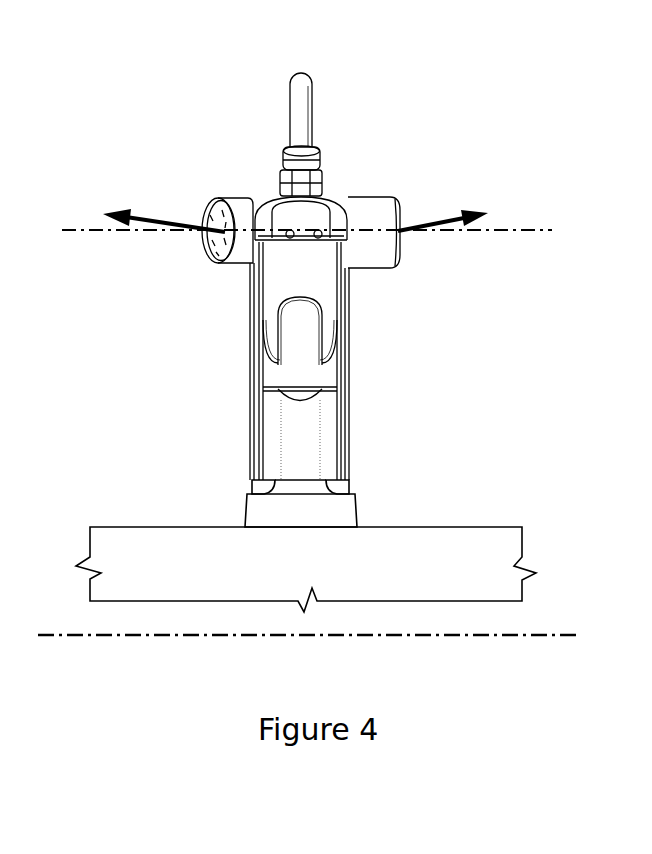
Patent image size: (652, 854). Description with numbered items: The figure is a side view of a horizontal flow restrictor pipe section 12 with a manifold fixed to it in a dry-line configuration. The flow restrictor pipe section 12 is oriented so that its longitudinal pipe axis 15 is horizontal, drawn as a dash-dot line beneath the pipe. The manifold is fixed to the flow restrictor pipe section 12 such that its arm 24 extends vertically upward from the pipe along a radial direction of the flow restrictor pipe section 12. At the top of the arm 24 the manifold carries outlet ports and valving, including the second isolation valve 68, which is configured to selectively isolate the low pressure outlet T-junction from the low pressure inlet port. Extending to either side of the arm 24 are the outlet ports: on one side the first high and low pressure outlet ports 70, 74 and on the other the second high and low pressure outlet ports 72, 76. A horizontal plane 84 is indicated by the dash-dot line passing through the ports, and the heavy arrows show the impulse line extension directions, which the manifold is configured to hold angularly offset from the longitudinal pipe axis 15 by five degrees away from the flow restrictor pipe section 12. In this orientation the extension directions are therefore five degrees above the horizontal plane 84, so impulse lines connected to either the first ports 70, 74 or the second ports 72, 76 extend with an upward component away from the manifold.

The flow restrictor pipe section 12 is at (142, 558).
The longitudinal pipe axis 15 is at (577, 628).
The arm 24 is at (332, 400).
The second isolation valve 68 is at (293, 108).
The first high pressure outlet port 70 is at (400, 216).
The second high pressure outlet port 72 is at (222, 240).
The first low pressure outlet port 74 is at (443, 181).
The second low pressure outlet port 76 is at (208, 222).
The horizontal plane 84 is at (513, 232).